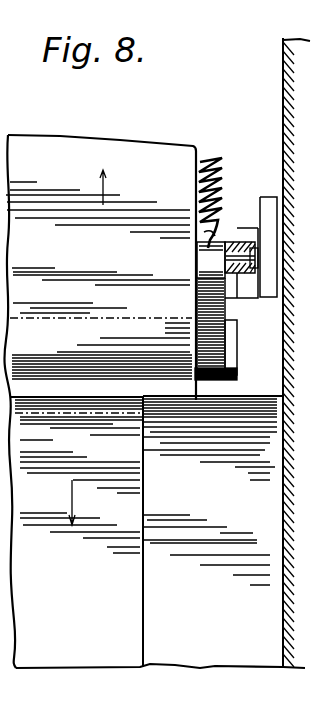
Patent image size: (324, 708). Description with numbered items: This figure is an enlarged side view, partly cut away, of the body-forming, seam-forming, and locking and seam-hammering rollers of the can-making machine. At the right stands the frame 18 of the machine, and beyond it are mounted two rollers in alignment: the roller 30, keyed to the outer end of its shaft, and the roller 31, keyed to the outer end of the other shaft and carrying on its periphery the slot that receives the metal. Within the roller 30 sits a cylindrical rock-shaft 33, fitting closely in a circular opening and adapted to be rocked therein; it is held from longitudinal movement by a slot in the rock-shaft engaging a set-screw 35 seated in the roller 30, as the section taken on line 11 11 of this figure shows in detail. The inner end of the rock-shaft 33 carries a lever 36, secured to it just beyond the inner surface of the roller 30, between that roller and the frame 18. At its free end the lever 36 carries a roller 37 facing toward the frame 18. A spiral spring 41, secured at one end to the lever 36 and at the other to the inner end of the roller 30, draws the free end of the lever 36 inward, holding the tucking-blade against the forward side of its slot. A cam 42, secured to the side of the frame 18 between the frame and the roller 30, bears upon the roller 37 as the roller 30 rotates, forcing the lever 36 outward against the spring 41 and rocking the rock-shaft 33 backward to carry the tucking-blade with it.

The frame 18 is at (283, 116).
The spiral spring 41 is at (212, 170).
The roller 37 is at (238, 242).
The roller 30 is at (154, 401).
The section line 11 11 is at (155, 380).
The set-screw 35 is at (146, 352).
The cam 42 is at (247, 288).
The lever 36 is at (222, 322).
The rock-shaft 33 is at (237, 375).
The roller 31 is at (146, 531).